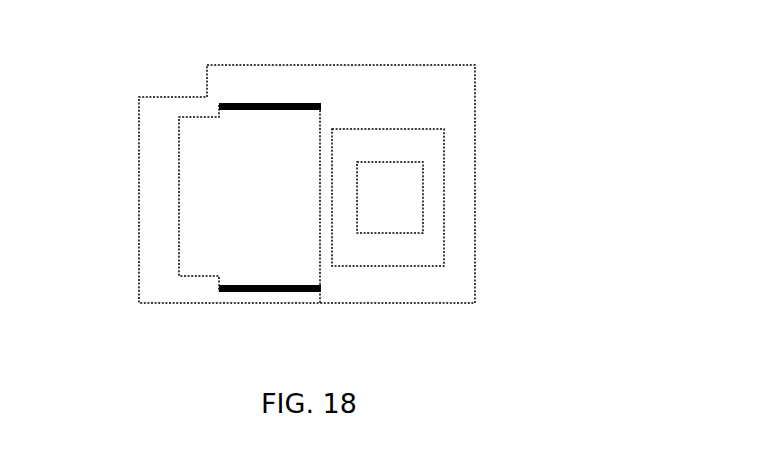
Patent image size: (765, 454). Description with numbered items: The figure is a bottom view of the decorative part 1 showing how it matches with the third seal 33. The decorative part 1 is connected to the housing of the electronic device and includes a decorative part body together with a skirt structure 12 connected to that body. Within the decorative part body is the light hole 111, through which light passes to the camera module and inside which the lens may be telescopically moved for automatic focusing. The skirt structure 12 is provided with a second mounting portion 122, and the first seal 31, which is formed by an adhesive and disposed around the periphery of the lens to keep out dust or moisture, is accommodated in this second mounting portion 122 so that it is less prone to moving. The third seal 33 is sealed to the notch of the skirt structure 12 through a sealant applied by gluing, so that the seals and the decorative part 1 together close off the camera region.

The decorative part 1 is at (309, 188).
The skirt structure 12 is at (152, 192).
The first seal 31 is at (322, 104).
The third seal 33 is at (204, 265).
The light hole 111 is at (412, 198).
The second mounting portion 122 is at (378, 256).